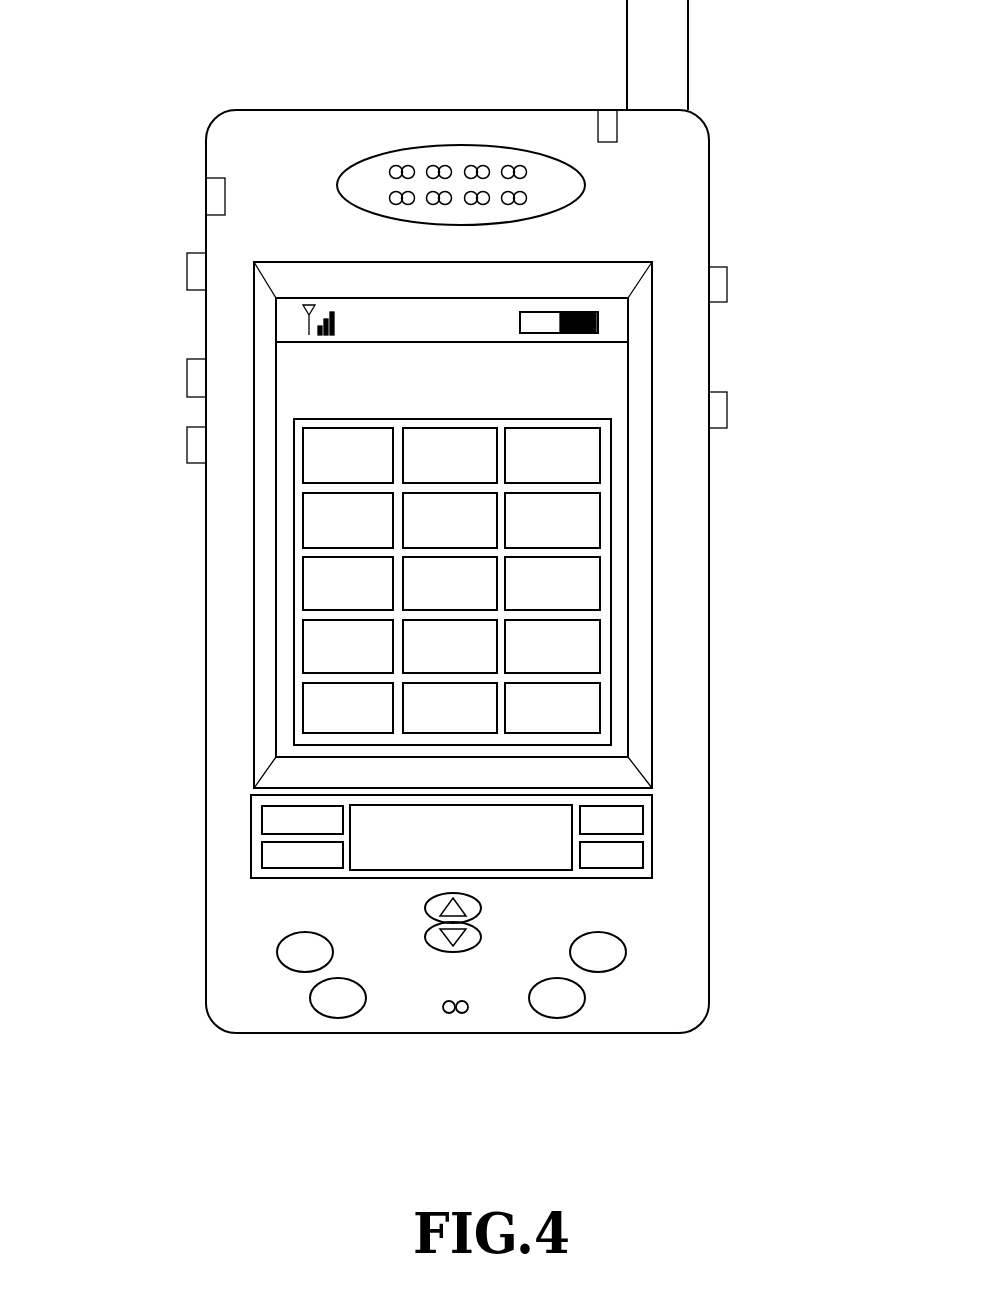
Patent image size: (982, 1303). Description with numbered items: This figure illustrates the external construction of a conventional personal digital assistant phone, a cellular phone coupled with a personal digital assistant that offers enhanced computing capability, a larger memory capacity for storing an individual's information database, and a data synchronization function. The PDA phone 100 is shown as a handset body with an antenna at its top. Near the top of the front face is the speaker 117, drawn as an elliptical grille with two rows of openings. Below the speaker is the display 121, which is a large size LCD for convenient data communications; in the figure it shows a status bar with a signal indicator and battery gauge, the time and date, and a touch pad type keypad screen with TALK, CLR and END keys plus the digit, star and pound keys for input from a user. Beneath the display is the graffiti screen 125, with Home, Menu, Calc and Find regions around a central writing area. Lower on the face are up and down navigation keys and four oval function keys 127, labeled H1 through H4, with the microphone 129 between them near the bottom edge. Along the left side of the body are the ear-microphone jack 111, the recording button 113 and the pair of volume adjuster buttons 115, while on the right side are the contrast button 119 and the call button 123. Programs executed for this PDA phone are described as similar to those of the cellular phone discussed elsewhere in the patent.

The PDA phone 100 is at (119, 115).
The ear-microphone jack 111 is at (212, 193).
The recording button 113 is at (197, 271).
The volume adjuster buttons 115 is at (197, 445).
The speaker 117 is at (545, 183).
The contrast button 119 is at (717, 282).
The display 121 is at (605, 368).
The call button 123 is at (717, 410).
The graffiti screen 125 is at (545, 833).
The function keys 127 is at (318, 1014).
The microphone 129 is at (466, 1022).